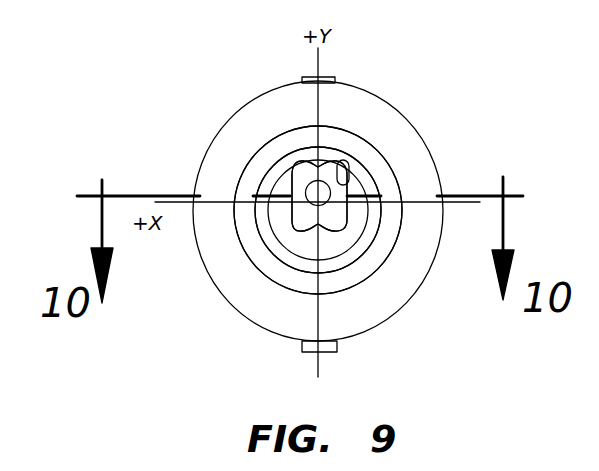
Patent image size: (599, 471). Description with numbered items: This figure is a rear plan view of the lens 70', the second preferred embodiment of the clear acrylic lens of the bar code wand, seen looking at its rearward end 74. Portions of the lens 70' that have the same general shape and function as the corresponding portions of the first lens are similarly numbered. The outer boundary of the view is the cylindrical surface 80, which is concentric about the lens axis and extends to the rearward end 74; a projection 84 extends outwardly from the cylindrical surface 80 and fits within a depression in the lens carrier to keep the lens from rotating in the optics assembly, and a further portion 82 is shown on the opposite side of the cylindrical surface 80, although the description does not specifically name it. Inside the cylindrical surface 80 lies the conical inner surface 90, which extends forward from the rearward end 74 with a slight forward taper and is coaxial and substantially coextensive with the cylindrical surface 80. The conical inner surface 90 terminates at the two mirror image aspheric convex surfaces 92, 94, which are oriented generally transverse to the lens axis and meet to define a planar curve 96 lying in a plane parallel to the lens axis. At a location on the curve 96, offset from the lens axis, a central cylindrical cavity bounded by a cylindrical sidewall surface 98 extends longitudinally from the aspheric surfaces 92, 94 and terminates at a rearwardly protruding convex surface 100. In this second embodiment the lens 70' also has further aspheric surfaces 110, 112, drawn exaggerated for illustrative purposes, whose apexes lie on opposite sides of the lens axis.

The lens 70' is at (217, 377).
The rearward end 74 is at (388, 149).
The cylindrical surface 80 is at (203, 273).
The upper tab 82 is at (332, 74).
The projection 84 is at (330, 348).
The conical inner surface 90 is at (353, 250).
The aspheric convex surface 92 is at (292, 177).
The aspheric convex surface 94 is at (388, 243).
The planar curve 96 is at (328, 127).
The cylindrical sidewall surface 98 is at (341, 166).
The rearwardly protruding convex surface 100 is at (307, 190).
The further aspheric surface 110 is at (296, 222).
The further aspheric surface 112 is at (296, 152).